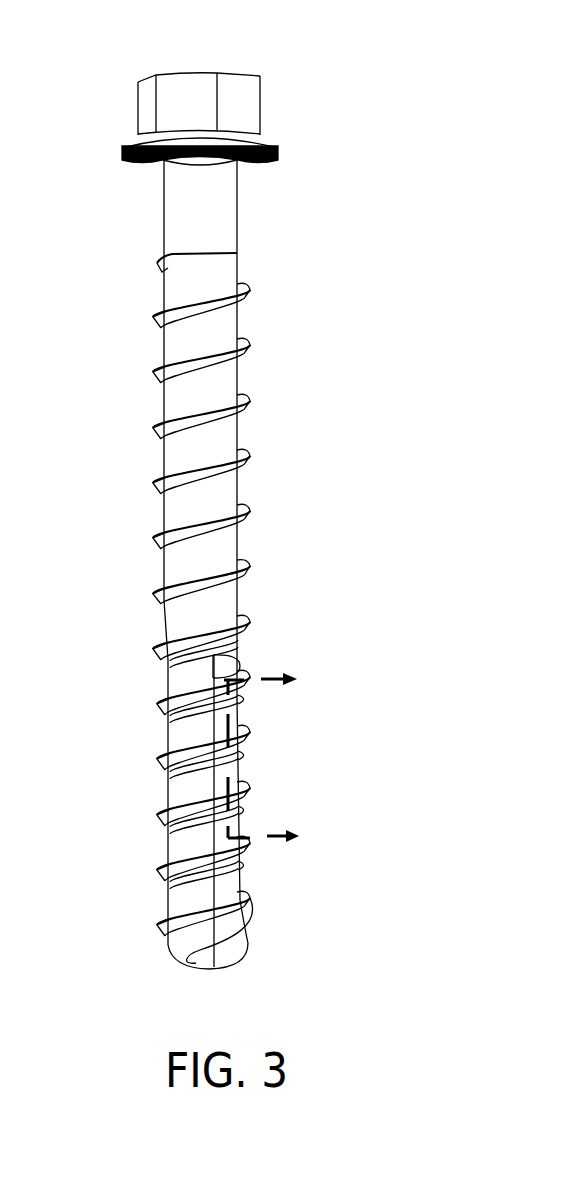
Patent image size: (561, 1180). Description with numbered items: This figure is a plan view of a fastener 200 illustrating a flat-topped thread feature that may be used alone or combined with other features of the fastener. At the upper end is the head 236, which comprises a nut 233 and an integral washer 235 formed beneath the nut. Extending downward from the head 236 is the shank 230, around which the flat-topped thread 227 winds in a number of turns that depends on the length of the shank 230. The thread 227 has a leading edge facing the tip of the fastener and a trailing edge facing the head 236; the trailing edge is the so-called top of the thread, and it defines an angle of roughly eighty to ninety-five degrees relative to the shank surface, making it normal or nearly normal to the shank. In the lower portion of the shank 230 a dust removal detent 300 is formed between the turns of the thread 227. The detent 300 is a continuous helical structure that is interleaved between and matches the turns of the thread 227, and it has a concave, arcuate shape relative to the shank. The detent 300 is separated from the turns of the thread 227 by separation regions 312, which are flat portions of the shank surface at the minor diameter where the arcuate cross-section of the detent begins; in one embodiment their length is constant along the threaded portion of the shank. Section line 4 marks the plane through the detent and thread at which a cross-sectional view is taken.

The fastener 200 is at (150, 41).
The nut 233 is at (258, 77).
The integral washer 235 is at (278, 146).
The head 236 is at (252, 177).
The shank 230 is at (237, 255).
The flat-topped thread 227 is at (158, 428).
The separation region 312 is at (167, 661).
The dust removal detent 300 is at (176, 732).
The section line 4- 4 is at (252, 758).